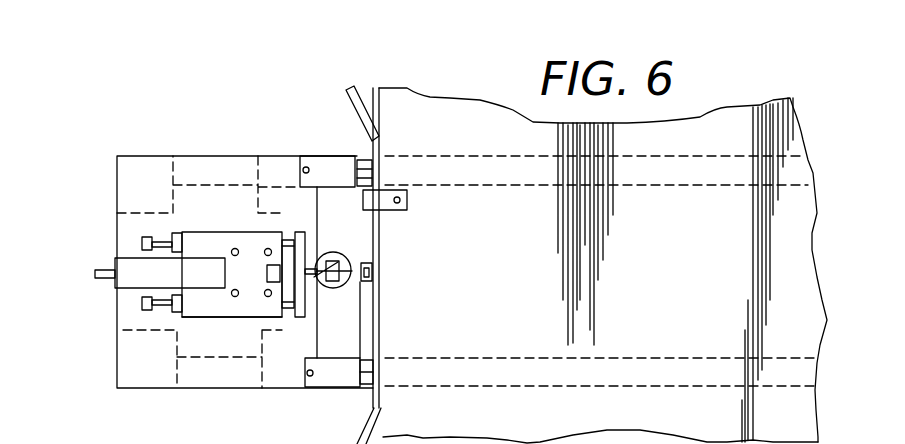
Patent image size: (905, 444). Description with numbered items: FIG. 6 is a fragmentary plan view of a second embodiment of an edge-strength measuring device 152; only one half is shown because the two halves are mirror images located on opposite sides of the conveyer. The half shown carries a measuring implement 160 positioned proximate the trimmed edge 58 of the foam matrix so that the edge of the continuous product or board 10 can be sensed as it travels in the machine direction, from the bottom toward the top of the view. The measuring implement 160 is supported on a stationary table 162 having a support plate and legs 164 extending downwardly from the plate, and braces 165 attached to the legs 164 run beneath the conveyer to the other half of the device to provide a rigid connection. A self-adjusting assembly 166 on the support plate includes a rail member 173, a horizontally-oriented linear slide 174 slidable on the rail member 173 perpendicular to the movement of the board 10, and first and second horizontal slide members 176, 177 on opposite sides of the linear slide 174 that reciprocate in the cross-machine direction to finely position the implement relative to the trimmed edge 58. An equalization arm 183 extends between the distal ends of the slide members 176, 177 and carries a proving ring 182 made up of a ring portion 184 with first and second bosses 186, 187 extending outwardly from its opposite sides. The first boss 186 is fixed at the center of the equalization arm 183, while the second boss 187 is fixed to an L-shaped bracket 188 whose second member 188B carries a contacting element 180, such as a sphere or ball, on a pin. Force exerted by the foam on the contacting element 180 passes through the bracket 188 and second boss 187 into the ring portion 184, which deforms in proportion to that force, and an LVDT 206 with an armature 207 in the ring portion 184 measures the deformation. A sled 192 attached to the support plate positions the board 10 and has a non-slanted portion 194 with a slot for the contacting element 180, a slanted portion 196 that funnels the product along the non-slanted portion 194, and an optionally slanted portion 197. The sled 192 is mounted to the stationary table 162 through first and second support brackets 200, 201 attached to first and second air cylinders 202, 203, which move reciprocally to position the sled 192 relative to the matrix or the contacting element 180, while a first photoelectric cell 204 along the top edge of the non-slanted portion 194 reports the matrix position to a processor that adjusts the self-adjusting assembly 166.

The board 10 is at (467, 118).
The trimmed edge 58 is at (365, 90).
The edge-strength measuring device 152 is at (174, 148).
The measuring implement 160 is at (335, 238).
The stationary table 162 is at (115, 203).
The legs 164 is at (120, 178).
The braces 165 is at (660, 178).
The self-adjusting assembly 166 is at (210, 320).
The rail member 173 is at (128, 270).
The horizontally-oriented linear slide 174 is at (195, 228).
The first horizontal slide member 176 is at (160, 240).
The second horizontal slide member 177 is at (163, 307).
The contacting element 180 is at (385, 270).
The proving ring 182 is at (357, 287).
The equalization arm 183 is at (310, 298).
The ring portion 184 is at (366, 262).
The first boss 186 is at (350, 258).
The second boss 187 is at (390, 213).
The L-shaped bracket 188 is at (310, 443).
The second member 188B is at (335, 442).
The sled 192 is at (385, 328).
The non-slanted portion 194 is at (378, 372).
The slanted portion 196 is at (377, 425).
The optionally slanted portion 197 is at (368, 112).
The first support bracket 200 is at (375, 171).
The second support bracket 201 is at (372, 380).
The first air cylinder 202 is at (343, 167).
The second air cylinder 203 is at (347, 375).
The first photoelectric cell 204 is at (405, 195).
The LVDT 206 is at (322, 235).
The armature 207 is at (318, 282).